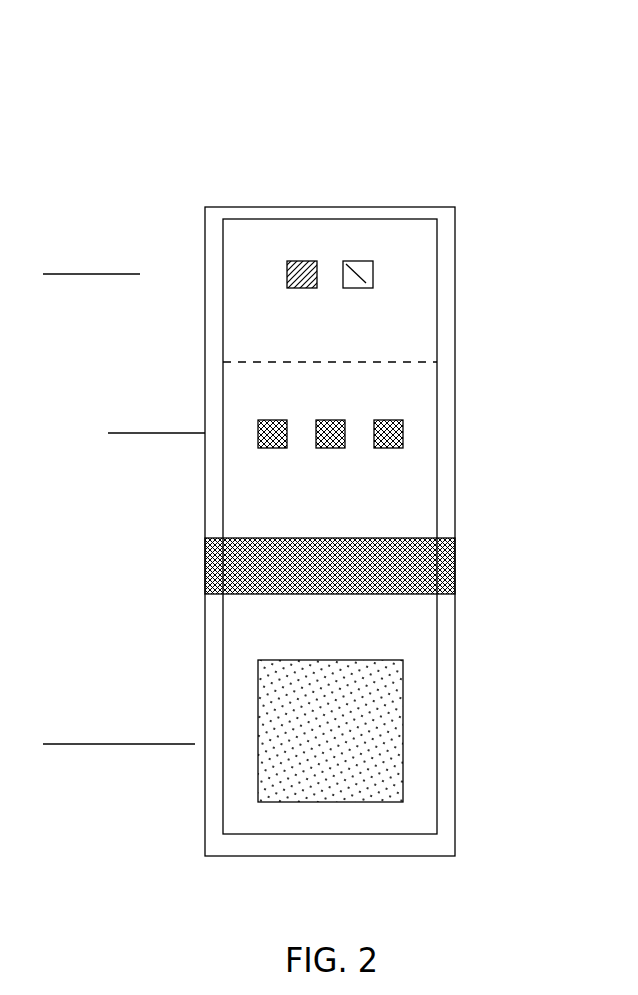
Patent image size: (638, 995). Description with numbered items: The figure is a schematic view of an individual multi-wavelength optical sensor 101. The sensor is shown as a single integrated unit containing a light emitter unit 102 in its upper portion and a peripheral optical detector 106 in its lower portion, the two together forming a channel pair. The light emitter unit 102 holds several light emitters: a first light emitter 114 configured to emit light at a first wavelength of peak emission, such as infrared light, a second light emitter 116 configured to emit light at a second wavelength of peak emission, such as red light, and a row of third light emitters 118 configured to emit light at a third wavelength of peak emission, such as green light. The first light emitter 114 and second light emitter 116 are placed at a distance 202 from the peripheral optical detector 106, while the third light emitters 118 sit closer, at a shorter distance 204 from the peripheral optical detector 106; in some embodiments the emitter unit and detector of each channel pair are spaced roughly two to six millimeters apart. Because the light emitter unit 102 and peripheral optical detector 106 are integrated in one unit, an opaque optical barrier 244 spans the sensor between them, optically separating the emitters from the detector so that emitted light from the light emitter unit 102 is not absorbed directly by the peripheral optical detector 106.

The multi-wavelength optical sensor 101 is at (244, 55).
The light emitter unit 102 is at (423, 341).
The first light emitter 114 is at (302, 261).
The second light emitter 116 is at (358, 261).
The third light emitters 118 is at (272, 448).
The opaque optical barrier 244 is at (425, 570).
The peripheral optical detector 106 is at (330, 728).
The distance 202 is at (92, 274).
The distance 204 is at (157, 433).